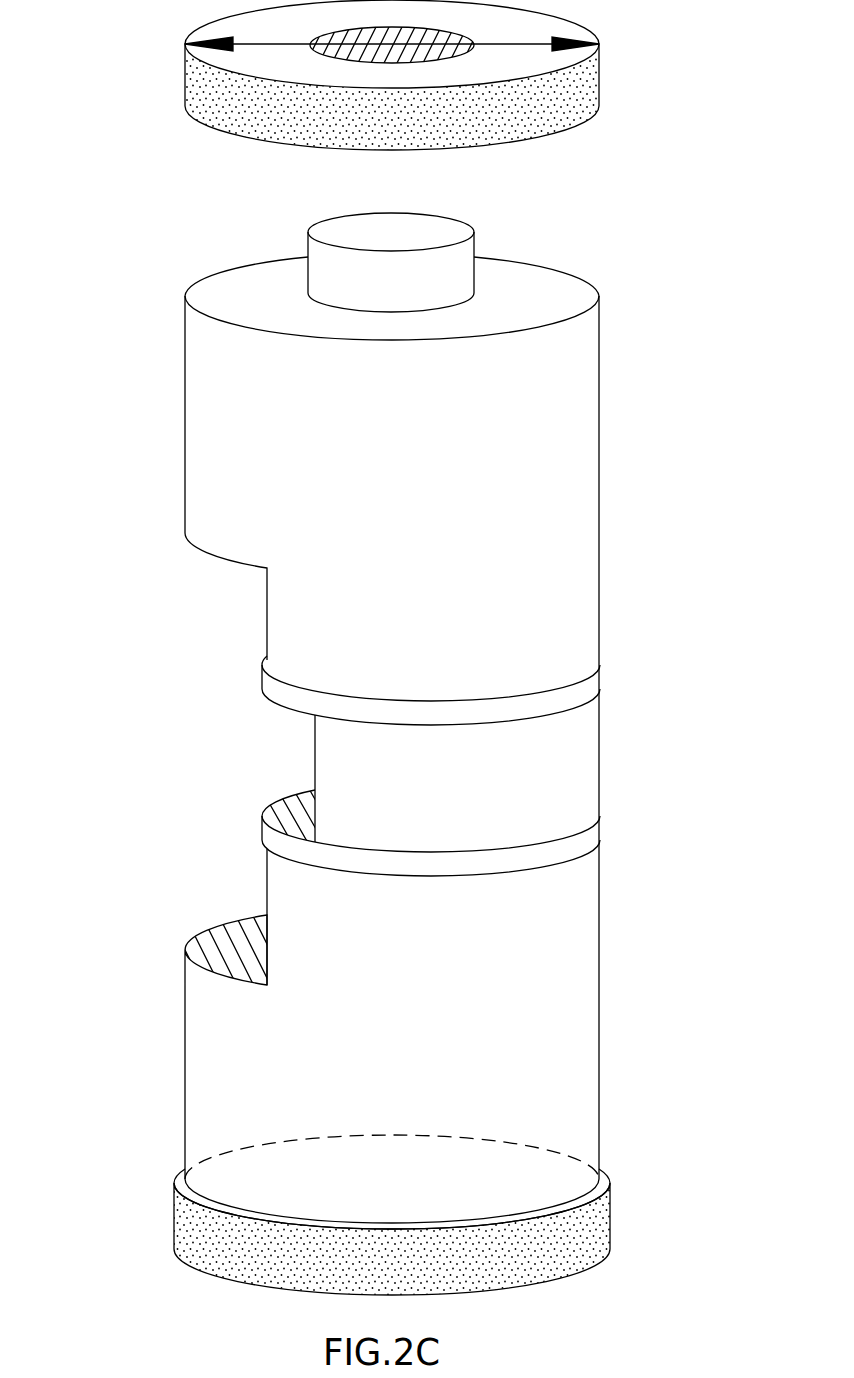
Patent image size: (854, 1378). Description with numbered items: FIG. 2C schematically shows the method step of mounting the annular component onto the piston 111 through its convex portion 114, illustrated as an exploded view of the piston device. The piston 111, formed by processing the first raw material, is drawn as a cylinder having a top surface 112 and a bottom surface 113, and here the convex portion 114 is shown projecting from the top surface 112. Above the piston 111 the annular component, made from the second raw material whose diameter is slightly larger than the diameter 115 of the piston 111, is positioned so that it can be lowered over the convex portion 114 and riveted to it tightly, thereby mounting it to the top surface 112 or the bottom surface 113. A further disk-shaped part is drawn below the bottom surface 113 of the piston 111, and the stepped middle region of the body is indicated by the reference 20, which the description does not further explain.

The middle connecting section 20 is at (599, 743).
The piston 111 is at (563, 585).
The top surface 112 is at (528, 313).
The bottom surface 113 is at (548, 1165).
The convex portion 114 is at (463, 222).
The diameter 115 is at (185, 50).